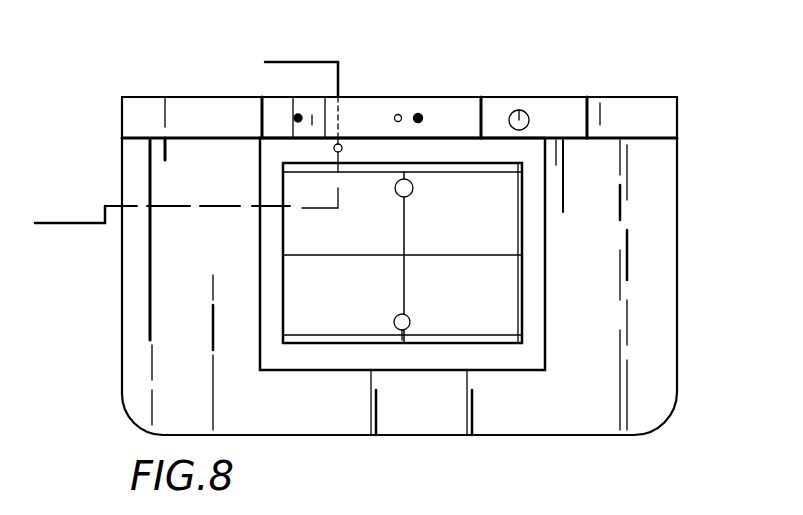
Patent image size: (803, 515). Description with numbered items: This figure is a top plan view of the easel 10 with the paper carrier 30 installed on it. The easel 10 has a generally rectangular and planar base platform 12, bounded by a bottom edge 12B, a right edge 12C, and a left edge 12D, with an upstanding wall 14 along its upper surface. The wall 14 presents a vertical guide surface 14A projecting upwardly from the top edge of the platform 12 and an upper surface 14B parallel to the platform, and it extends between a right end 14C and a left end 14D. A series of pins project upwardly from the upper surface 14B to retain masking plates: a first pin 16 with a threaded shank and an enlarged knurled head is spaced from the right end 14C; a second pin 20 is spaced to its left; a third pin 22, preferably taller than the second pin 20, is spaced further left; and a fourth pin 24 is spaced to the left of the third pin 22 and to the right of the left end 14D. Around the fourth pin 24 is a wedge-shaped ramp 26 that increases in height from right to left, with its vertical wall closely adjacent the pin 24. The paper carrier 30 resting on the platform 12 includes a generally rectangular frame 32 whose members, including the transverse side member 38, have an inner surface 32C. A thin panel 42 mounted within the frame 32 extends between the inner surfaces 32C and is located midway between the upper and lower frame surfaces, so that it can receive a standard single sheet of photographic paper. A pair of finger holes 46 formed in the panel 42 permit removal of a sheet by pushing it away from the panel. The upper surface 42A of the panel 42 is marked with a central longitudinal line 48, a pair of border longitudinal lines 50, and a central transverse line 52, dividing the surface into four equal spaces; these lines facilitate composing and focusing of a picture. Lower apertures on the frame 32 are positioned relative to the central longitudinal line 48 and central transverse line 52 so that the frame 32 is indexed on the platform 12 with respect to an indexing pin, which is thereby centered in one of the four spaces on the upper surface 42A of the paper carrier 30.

The easel 10 is at (618, 38).
The base platform 12 is at (150, 228).
The bottom edge 12B is at (380, 437).
The right edge 12C is at (677, 340).
The left edge 12D is at (122, 272).
The wall 14 is at (600, 103).
The vertical guide surface 14A is at (165, 140).
The upper surface 14B is at (235, 112).
The right end 14C is at (677, 118).
The left end 14D is at (122, 120).
The first pin 16 is at (519, 110).
The second pin 20 is at (418, 114).
The third pin 22 is at (398, 114).
The fourth pin 24 is at (298, 114).
The wedge-shaped ramp 26 is at (316, 118).
The paper carrier 30 is at (505, 380).
The frame 32 is at (537, 227).
The inner surface 32C is at (288, 258).
The transverse side member 38 is at (262, 214).
The panel 42 is at (510, 282).
The upper surface 42A is at (490, 309).
The finger holes 46 is at (402, 332).
The central longitudinal line 48 is at (435, 255).
The border longitudinal lines 50 is at (462, 177).
The central transverse line 52 is at (404, 280).